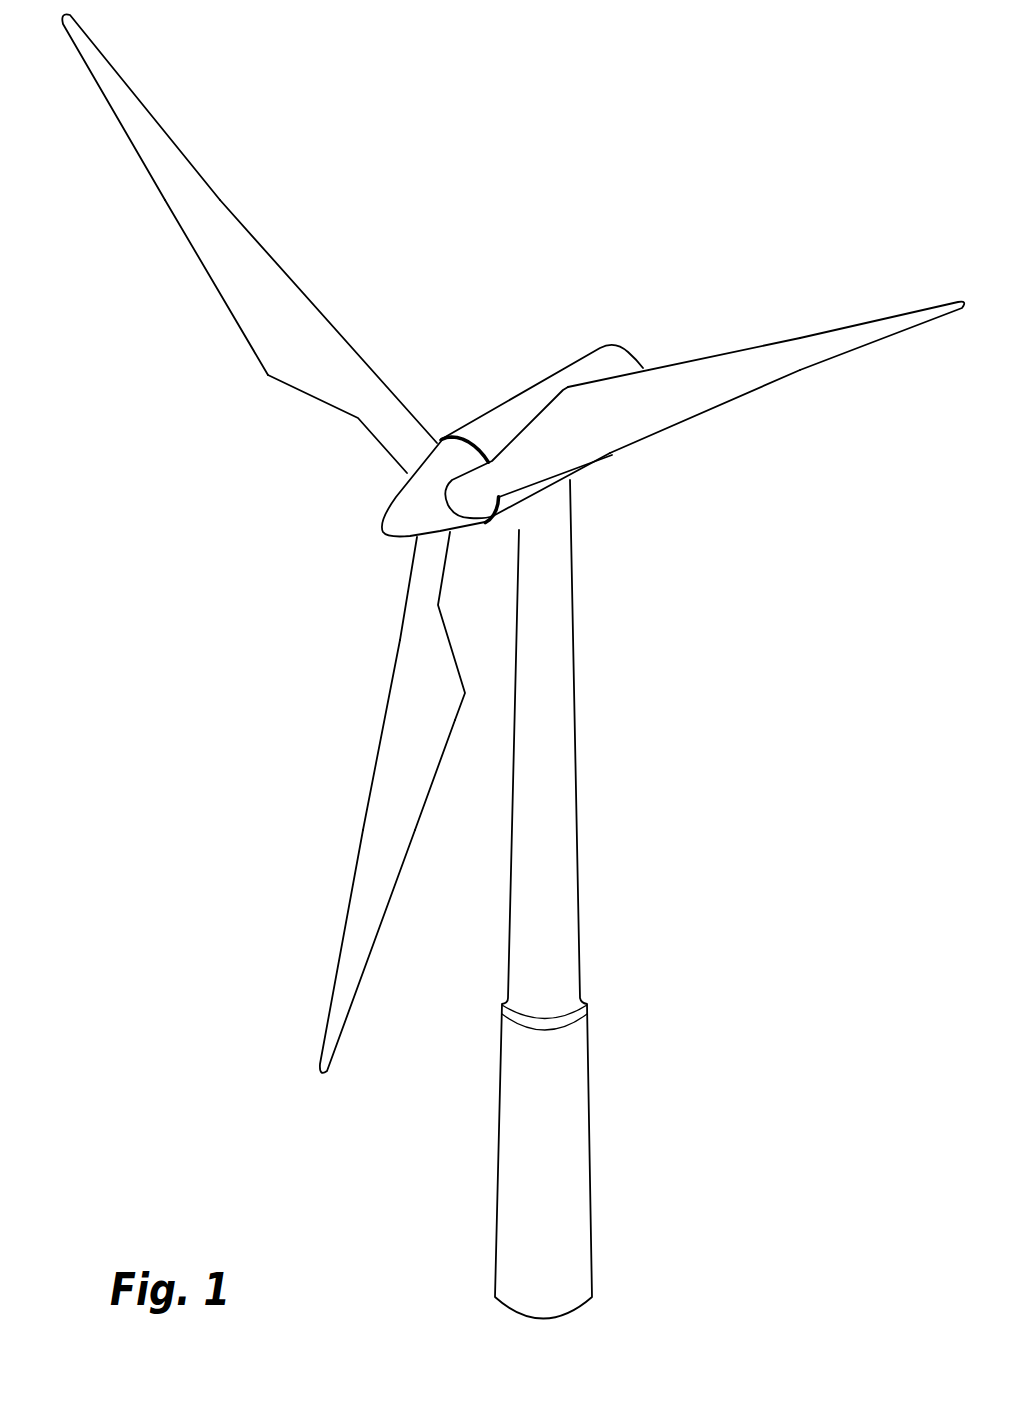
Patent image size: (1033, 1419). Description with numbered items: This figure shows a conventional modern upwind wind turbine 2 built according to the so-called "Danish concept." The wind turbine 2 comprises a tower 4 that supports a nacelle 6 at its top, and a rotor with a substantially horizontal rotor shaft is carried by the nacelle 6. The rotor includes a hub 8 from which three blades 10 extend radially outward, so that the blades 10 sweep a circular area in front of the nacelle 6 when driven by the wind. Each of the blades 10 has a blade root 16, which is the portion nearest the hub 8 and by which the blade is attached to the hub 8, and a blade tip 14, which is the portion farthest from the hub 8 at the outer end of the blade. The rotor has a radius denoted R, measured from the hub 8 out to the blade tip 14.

The wind turbine 2 is at (684, 830).
The tower 4 is at (563, 743).
The nacelle 6 is at (508, 413).
The hub 8 is at (404, 509).
The blades 10 is at (282, 342).
The blade tip 14 is at (108, 78).
The blade root 16 is at (413, 457).